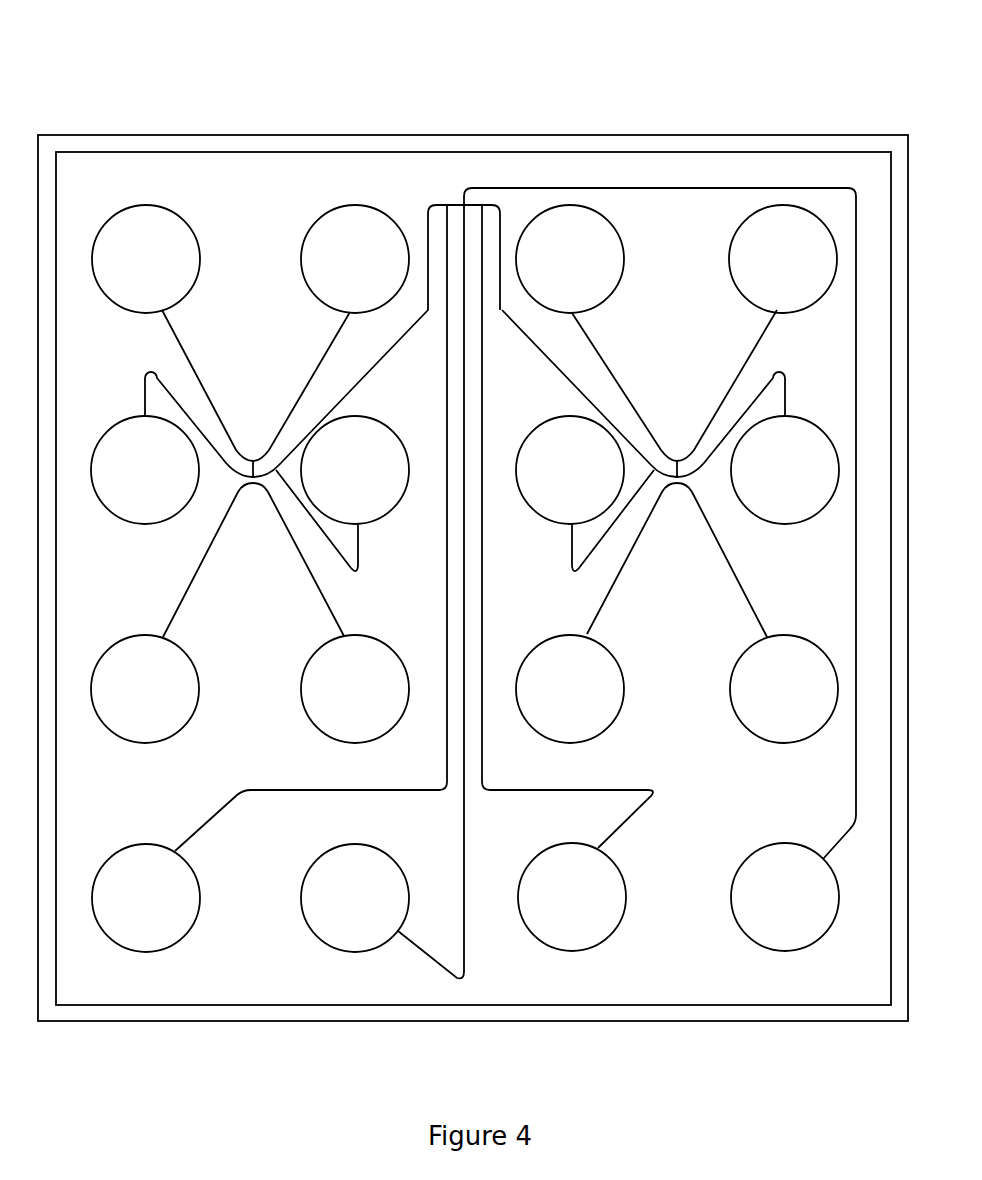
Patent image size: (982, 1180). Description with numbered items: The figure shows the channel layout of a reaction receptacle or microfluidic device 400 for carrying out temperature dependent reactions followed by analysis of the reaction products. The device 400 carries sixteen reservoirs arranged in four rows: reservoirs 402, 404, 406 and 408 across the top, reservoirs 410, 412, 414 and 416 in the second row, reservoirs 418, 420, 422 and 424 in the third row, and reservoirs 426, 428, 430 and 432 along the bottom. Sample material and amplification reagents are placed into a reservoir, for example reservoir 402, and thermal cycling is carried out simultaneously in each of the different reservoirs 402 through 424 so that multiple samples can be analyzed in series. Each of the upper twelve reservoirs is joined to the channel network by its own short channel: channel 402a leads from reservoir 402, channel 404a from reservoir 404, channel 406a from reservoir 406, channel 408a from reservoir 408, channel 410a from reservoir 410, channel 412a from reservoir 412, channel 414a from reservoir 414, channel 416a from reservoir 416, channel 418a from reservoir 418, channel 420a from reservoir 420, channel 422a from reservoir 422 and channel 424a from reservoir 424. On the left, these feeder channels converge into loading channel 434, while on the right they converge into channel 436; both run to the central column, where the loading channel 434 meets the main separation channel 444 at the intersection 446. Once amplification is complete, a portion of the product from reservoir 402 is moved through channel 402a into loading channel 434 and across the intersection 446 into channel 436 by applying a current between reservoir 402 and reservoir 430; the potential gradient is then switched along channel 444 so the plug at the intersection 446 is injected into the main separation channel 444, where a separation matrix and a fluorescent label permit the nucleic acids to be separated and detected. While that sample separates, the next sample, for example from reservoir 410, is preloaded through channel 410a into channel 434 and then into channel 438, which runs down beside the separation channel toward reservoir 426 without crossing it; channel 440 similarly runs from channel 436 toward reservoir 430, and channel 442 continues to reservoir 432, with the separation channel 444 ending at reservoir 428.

The microfluidic device 400 is at (77, 110).
The reservoir 402 is at (146, 259).
The reservoir 404 is at (355, 259).
The reservoir 406 is at (570, 259).
The reservoir 408 is at (783, 259).
The reservoir 410 is at (145, 470).
The reservoir 412 is at (355, 470).
The reservoir 414 is at (570, 470).
The reservoir 416 is at (785, 470).
The reservoir 418 is at (145, 689).
The reservoir 420 is at (355, 689).
The reservoir 422 is at (570, 689).
The reservoir 424 is at (784, 689).
The reservoir 426 is at (146, 898).
The reservoir 428 is at (355, 898).
The reservoir 430 is at (572, 897).
The reservoir 432 is at (785, 897).
The channel 402a is at (192, 360).
The channel from reservoir 404 404a is at (288, 420).
The channel from reservoir 406 406a is at (604, 365).
The channel from reservoir 408 408a is at (744, 365).
The channel 410a is at (145, 392).
The channel from reservoir 412 412a is at (347, 520).
The channel from reservoir 414 414a is at (571, 548).
The channel from reservoir 416 416a is at (786, 388).
The channel from reservoir 418 418a is at (185, 596).
The channel from reservoir 420 420a is at (312, 578).
The channel from reservoir 422 422a is at (617, 577).
The channel from reservoir 424 424a is at (736, 578).
The loading channel 434 is at (396, 344).
The channel 436 is at (535, 347).
The channel 438 is at (446, 733).
The channel to reservoir 430 440 is at (483, 737).
The channel to reservoir 432 442 is at (853, 807).
The main separation channel 444 is at (465, 827).
The intersection 446 is at (440, 178).